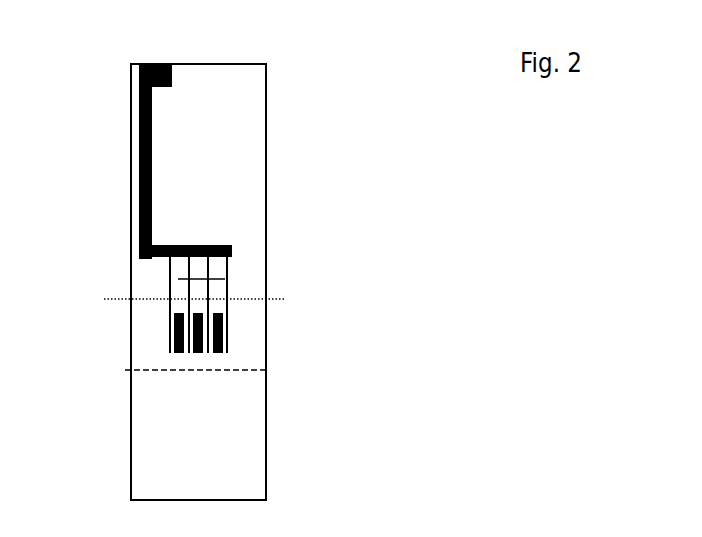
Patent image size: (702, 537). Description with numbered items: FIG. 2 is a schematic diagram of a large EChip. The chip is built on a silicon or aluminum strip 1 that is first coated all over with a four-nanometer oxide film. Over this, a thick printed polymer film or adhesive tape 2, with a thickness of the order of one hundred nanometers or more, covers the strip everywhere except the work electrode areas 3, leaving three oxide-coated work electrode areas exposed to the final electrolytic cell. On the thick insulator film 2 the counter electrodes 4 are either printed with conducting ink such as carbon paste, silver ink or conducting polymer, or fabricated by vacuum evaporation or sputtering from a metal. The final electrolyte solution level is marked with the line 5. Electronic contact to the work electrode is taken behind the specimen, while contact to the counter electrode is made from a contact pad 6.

The silicon or aluminum strip 1 is at (273, 190).
The thick printed polymer film or adhesive tape 2 is at (233, 163).
The work electrode areas 3 is at (182, 353).
The counter electrodes 4 is at (230, 283).
The final electrolyte solution level 5 is at (287, 290).
The contact pad 6 is at (138, 92).